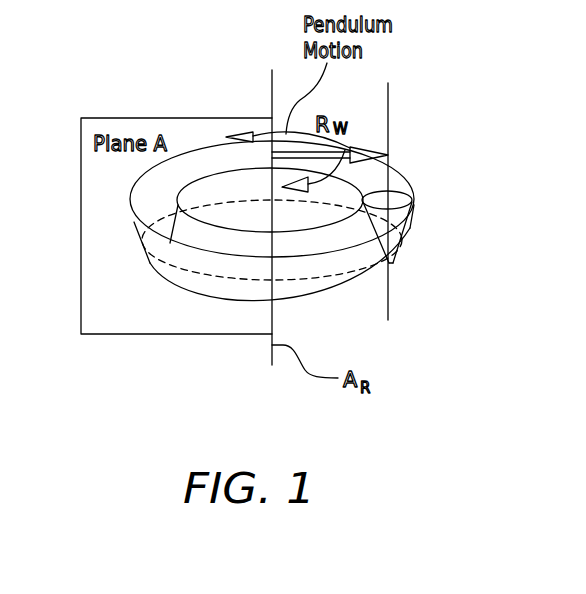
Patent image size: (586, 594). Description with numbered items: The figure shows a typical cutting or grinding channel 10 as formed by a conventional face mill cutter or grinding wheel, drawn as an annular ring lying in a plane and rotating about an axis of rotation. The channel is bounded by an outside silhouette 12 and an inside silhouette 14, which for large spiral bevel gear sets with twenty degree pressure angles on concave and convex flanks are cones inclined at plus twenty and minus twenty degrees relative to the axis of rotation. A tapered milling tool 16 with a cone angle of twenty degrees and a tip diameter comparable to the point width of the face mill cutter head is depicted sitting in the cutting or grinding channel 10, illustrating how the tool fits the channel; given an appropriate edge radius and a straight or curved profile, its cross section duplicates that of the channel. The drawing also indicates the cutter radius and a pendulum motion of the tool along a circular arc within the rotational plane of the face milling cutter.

The cutting or grinding channel 10 is at (171, 190).
The outside silhouette 12 is at (140, 236).
The inside silhouette 14 is at (197, 238).
The tapered milling tool 16 is at (412, 213).